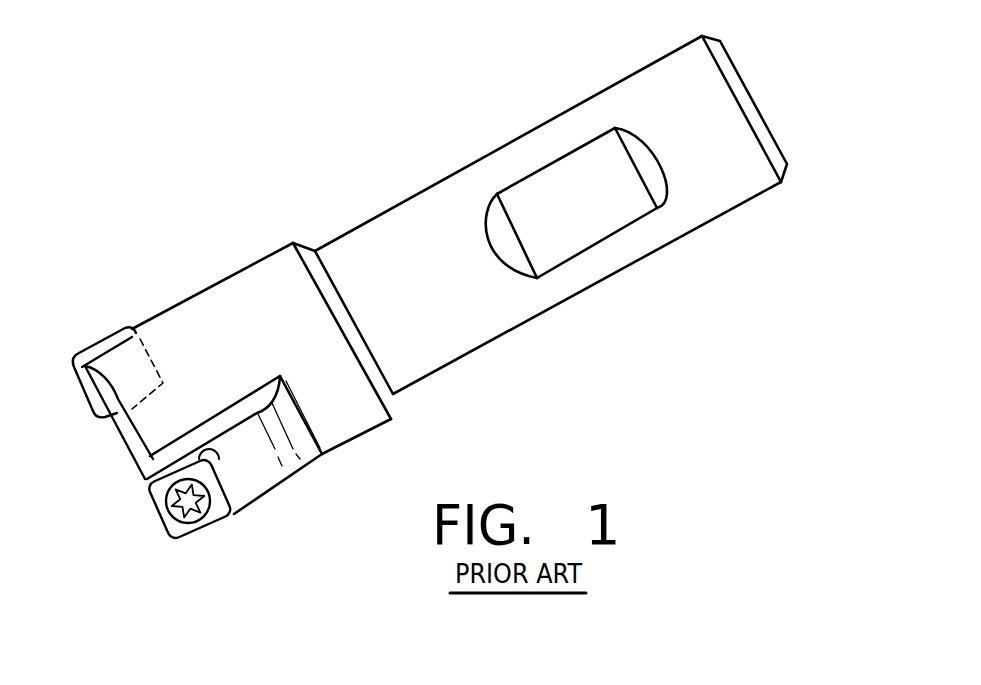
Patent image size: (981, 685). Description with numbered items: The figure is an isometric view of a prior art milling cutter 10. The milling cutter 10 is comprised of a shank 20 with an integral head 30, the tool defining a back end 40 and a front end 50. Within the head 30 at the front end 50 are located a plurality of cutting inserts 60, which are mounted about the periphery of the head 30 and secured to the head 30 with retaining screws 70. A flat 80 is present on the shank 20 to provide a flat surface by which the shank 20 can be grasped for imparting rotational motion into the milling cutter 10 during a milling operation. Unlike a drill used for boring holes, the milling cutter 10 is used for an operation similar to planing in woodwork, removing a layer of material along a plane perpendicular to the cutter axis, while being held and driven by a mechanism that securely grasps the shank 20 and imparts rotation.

The milling cutter 10 is at (348, 193).
The shank 20 is at (517, 136).
The head 30 is at (230, 278).
The back end 40 is at (771, 125).
The front end 50 is at (133, 458).
The cutting inserts 60 is at (110, 337).
The retaining screws 70 is at (173, 520).
The flat 80 is at (603, 163).